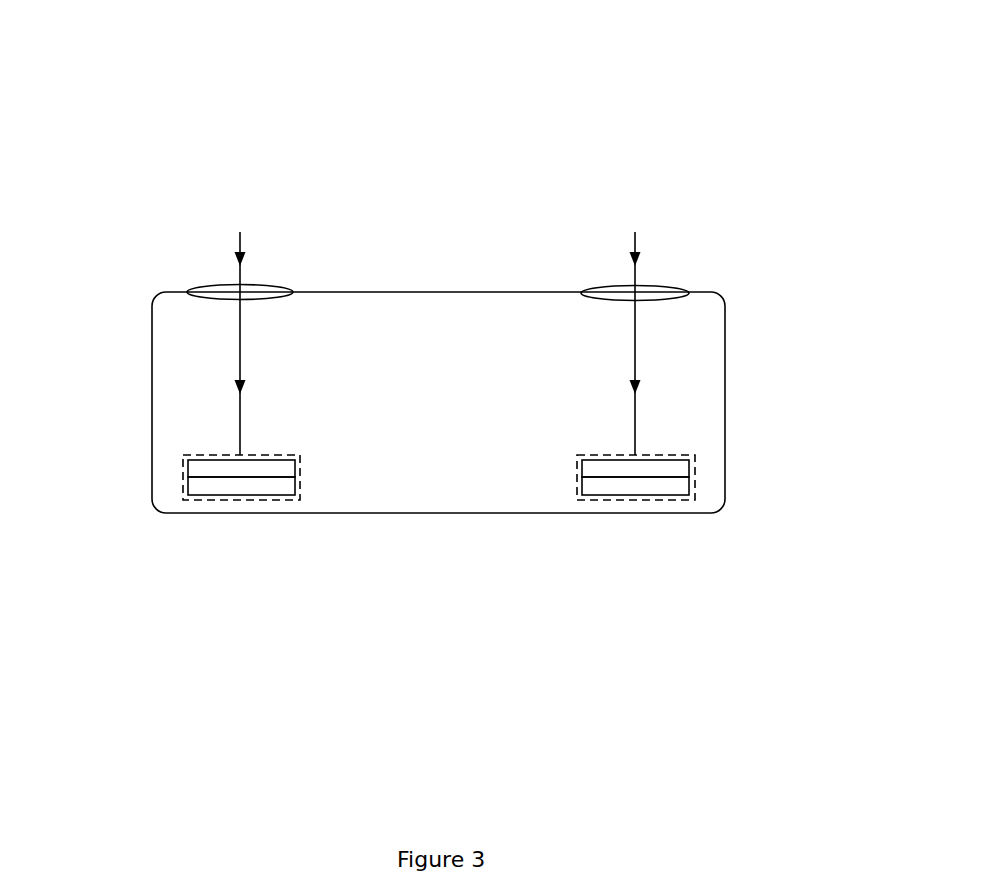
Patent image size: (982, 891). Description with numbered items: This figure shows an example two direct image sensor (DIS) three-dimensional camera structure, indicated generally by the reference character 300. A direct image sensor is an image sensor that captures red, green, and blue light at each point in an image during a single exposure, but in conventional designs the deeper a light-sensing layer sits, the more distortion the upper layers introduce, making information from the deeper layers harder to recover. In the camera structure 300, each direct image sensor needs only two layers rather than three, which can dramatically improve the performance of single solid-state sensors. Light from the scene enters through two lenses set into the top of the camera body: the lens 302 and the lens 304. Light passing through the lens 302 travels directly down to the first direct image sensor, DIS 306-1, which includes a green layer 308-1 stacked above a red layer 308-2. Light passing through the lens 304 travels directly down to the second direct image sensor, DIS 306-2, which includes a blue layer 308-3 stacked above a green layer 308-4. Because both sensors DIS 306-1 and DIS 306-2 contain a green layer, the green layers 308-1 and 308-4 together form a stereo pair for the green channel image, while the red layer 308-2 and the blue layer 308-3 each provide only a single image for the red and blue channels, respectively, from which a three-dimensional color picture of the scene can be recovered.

The two direct image sensor (DIS) 3-D camera structure 300 is at (143, 32).
The lens 302 is at (287, 285).
The lens 304 is at (593, 285).
The direct image sensor (DIS) 306-1 is at (221, 483).
The direct image sensor (DIS) 306-2 is at (653, 484).
The green layer 308-1 is at (190, 472).
The red layer 308-2 is at (185, 490).
The blue layer 308-3 is at (690, 468).
The green layer 308-4 is at (690, 488).